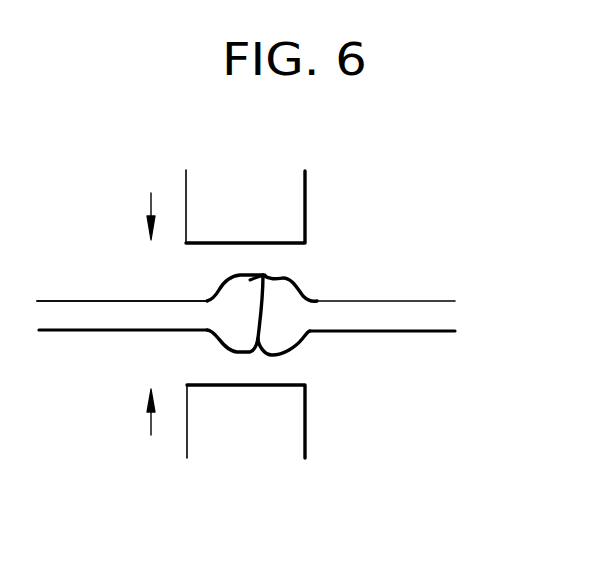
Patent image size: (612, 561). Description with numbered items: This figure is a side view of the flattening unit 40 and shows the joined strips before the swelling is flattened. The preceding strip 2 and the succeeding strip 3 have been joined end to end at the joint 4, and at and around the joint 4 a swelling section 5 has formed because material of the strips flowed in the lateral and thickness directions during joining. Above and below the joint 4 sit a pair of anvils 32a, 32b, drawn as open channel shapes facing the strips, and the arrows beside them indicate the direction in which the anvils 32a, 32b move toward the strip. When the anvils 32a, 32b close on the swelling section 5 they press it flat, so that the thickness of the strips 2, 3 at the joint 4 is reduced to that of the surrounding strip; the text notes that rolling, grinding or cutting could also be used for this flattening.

The preceding strip 2 is at (437, 301).
The succeeding strip 3 is at (97, 307).
The joint 4 is at (263, 320).
The swelling section 5 is at (253, 283).
The anvil 32a is at (305, 196).
The anvil 32b is at (298, 423).
The flattening unit 40 is at (243, 180).